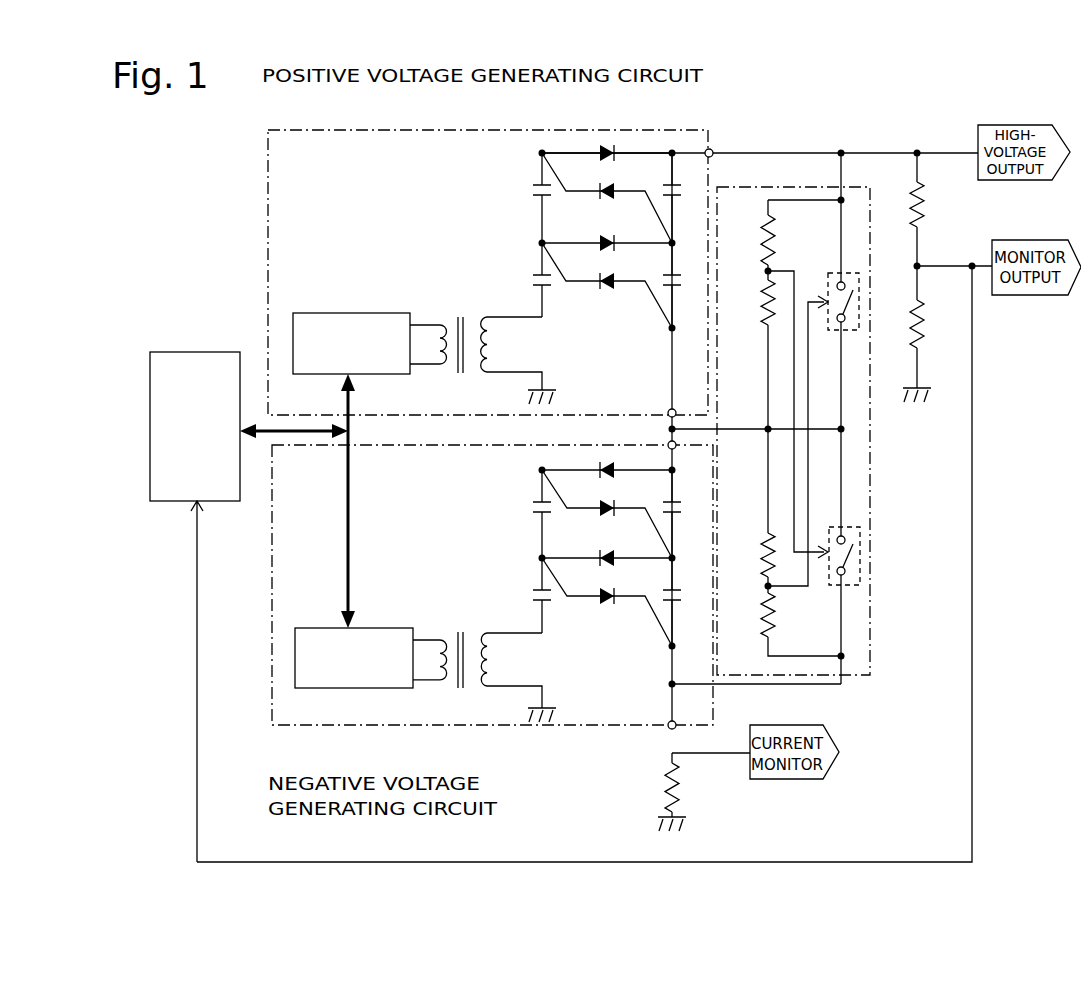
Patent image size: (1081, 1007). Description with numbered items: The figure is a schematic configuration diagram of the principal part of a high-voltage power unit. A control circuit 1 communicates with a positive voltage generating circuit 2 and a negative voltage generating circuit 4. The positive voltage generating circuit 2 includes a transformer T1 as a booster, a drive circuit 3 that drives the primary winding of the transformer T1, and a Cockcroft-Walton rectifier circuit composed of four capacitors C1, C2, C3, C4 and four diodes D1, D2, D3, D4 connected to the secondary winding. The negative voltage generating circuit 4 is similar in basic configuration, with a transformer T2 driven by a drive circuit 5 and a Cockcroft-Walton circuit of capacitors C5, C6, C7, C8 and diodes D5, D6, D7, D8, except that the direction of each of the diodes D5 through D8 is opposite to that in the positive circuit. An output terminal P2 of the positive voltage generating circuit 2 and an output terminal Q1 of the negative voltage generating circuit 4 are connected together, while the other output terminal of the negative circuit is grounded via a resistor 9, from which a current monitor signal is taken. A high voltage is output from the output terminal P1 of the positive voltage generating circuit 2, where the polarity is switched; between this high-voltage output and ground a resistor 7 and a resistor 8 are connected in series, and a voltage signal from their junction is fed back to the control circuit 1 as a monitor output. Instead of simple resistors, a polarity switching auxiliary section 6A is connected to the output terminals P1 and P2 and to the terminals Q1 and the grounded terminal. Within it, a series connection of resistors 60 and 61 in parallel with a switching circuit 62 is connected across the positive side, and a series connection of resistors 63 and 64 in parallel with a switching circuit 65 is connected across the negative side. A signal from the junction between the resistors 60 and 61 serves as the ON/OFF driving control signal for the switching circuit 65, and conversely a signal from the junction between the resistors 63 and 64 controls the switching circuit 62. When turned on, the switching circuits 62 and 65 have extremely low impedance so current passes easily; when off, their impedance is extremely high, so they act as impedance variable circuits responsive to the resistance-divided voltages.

The control circuit 1 is at (186, 351).
The positive voltage generating circuit 2 is at (333, 130).
The drive circuit 3 is at (350, 313).
The negative voltage generating circuit 4 is at (338, 727).
The drive circuit 5 is at (326, 628).
The polarity switching auxiliary section 6A is at (871, 447).
The resistor 7 is at (922, 196).
The resistor 8 is at (922, 314).
The resistor 9 is at (683, 800).
The resistor 60 is at (762, 237).
The resistor 61 is at (762, 305).
The switching circuit 62 is at (830, 266).
The resistor 63 is at (762, 538).
The resistor 64 is at (762, 602).
The switching circuit 65 is at (836, 519).
The transformer T1 is at (483, 347).
The transformer T2 is at (484, 665).
The capacitor C1 is at (529, 198).
The capacitor C2 is at (529, 280).
The capacitor C3 is at (681, 198).
The capacitor C4 is at (681, 285).
The capacitor C5 is at (529, 514).
The capacitor C6 is at (529, 595).
The capacitor C7 is at (681, 514).
The capacitor C8 is at (681, 602).
The diode D1 is at (607, 147).
The diode D2 is at (607, 198).
The diode D3 is at (607, 236).
The diode D4 is at (607, 285).
The diode D5 is at (607, 463).
The diode D6 is at (607, 514).
The diode D7 is at (607, 551).
The diode D8 is at (607, 602).
The output terminal P1 is at (713, 148).
The output terminal P2 is at (668, 410).
The output terminal Q1 is at (668, 443).